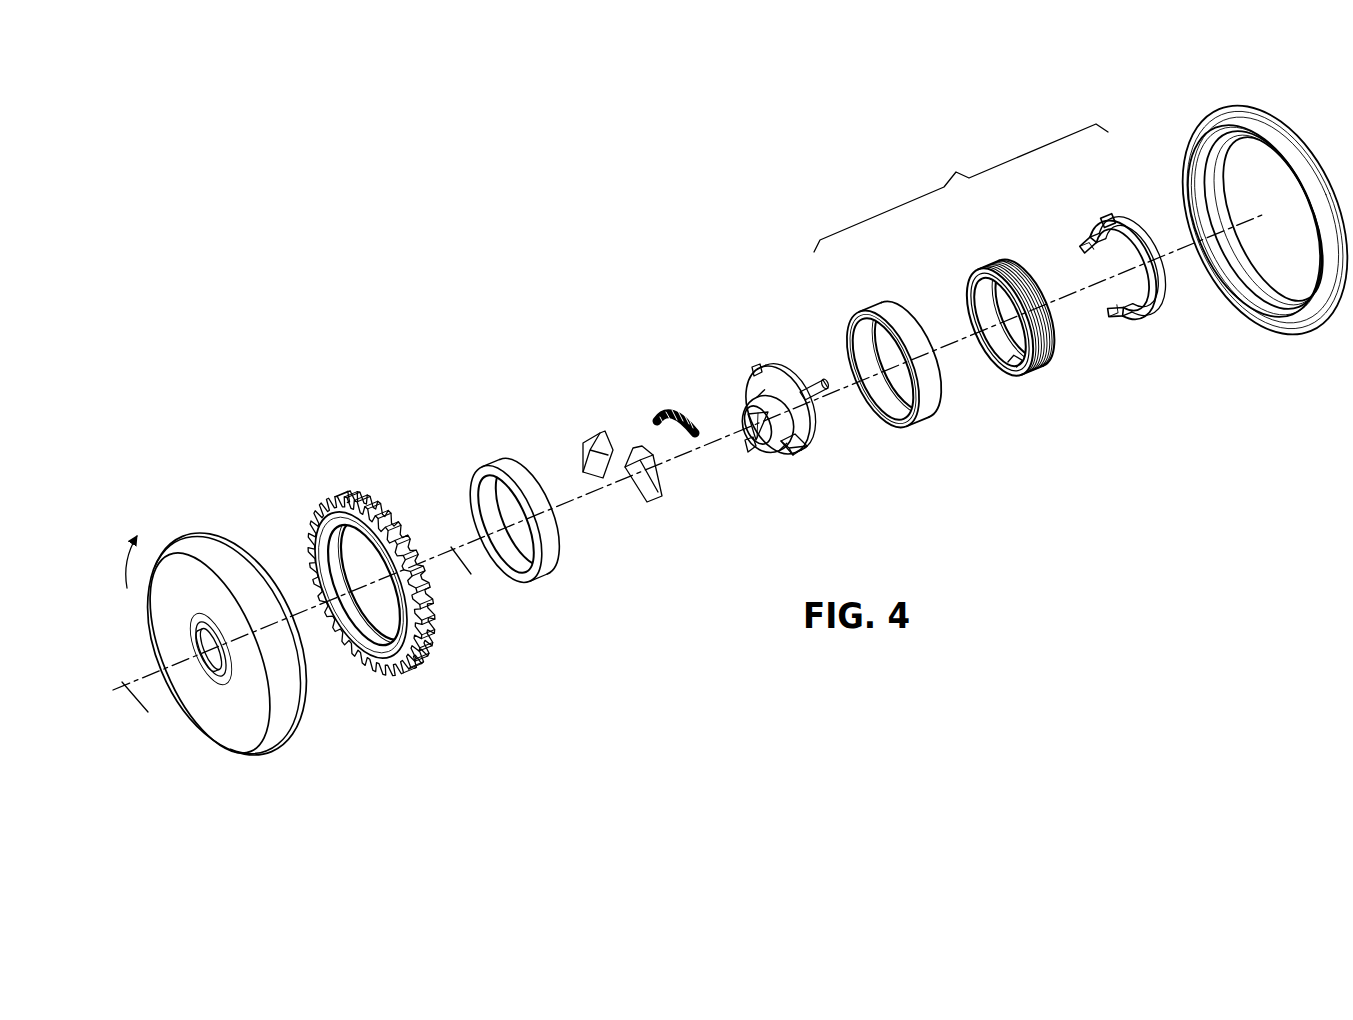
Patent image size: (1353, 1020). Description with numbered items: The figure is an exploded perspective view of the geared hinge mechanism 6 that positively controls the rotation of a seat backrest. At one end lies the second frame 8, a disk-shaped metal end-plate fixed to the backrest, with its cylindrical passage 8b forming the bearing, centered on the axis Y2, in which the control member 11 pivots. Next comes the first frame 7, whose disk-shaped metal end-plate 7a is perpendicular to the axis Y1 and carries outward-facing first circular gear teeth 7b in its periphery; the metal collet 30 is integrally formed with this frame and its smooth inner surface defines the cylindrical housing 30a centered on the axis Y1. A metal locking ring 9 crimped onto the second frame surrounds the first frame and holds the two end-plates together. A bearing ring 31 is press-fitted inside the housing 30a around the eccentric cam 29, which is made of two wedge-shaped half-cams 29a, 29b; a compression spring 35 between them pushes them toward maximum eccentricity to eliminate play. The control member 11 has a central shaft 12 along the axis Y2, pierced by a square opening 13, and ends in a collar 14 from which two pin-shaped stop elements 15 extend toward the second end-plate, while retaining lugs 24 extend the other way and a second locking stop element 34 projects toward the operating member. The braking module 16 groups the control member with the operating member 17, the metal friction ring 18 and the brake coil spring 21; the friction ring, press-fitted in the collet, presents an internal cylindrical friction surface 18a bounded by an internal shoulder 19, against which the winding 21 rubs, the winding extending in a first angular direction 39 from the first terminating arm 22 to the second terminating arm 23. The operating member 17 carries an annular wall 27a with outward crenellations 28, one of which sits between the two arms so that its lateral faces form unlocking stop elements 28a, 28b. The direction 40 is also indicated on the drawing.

The hinge mechanism 6 is at (656, 217).
The first frame 7 is at (369, 561).
The first disk-shaped metal end-plate 7a is at (361, 585).
The first circular gear teeth 7b is at (394, 574).
The second frame 8 is at (209, 665).
The cylindrical passage 8b is at (203, 648).
The metal locking ring 9 is at (1272, 108).
The control member 11 is at (775, 404).
The central shaft 12 is at (767, 422).
The opening 13 is at (757, 425).
The collar 14 is at (781, 408).
The stop elements 15 is at (753, 408).
The braking module 16 is at (961, 188).
The operating member 17 is at (1116, 291).
The metal friction ring 18 is at (901, 387).
The internal cylindrical friction surface 18a is at (862, 352).
The internal shoulder 19 is at (883, 369).
The winding 21 is at (1007, 327).
The first terminating arm 22 is at (1000, 322).
The second terminating arm 23 is at (1010, 268).
The retaining lugs 24 is at (815, 389).
The annular wall 27a is at (1108, 221).
The crenellations 28 is at (1102, 278).
The unlocking stop element 28a is at (1116, 308).
The unlocking stop element 28b is at (1096, 280).
The eccentric cam 29 is at (613, 444).
The half-cam 29a is at (583, 452).
The half-cam 29b is at (660, 480).
The metal collet 30 is at (372, 582).
The cylindrical housing 30a is at (376, 579).
The ring 31 is at (548, 560).
The second locking stop element 34 is at (794, 444).
The spring 35 is at (673, 410).
The first angular direction 39 is at (318, 665).
The rotation direction 40 is at (128, 570).
The axis Y1 is at (472, 577).
The central axis Y2 is at (146, 712).